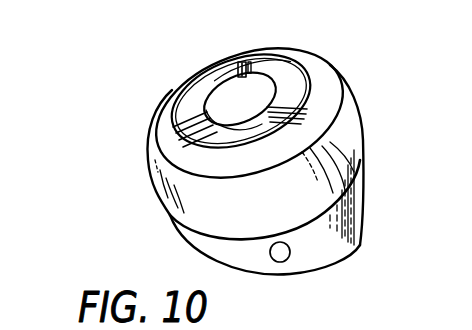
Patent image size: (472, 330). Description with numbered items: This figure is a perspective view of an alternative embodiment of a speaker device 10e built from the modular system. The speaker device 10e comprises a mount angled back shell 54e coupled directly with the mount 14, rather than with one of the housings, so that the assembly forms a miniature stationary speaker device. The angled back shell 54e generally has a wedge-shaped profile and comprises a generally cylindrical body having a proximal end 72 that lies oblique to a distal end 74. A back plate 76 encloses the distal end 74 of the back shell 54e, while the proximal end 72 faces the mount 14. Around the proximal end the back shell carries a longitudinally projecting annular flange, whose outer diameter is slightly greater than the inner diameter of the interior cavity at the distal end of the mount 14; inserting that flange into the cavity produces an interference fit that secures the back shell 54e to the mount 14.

The speaker device 10e is at (112, 191).
The mount 14 is at (310, 68).
The proximal end 72 is at (349, 191).
The mount angled back shell 54e is at (345, 228).
The distal end 74 is at (337, 265).
The back plate 76 is at (279, 277).